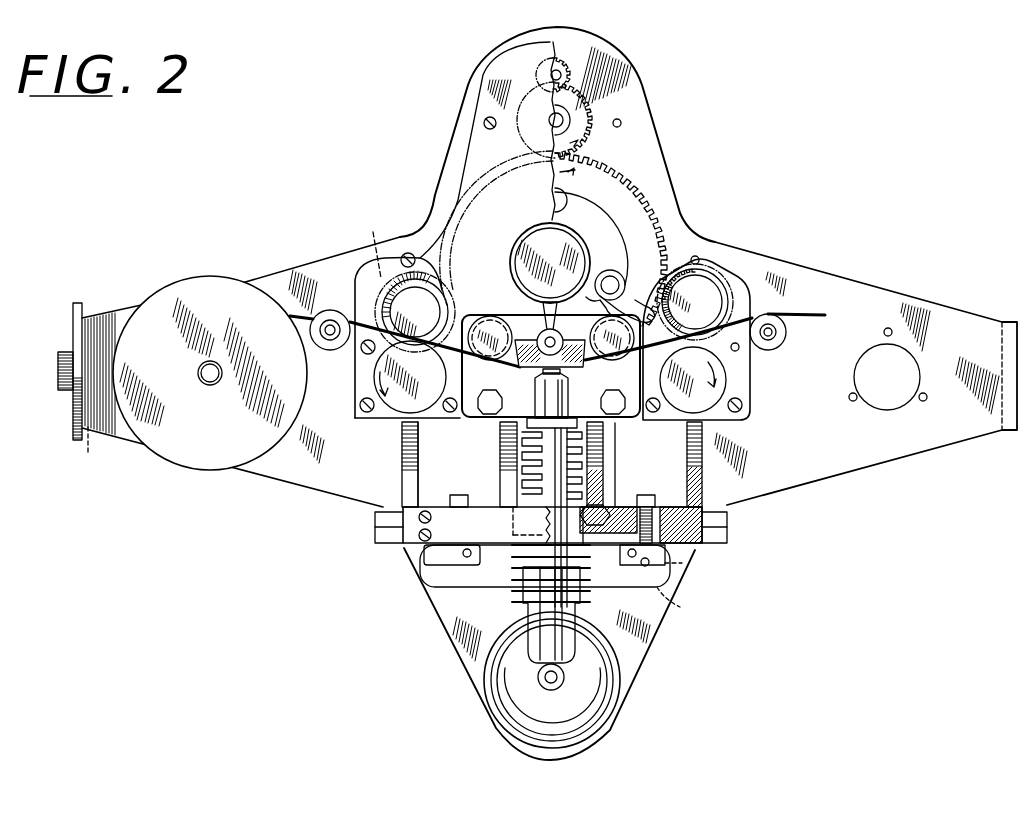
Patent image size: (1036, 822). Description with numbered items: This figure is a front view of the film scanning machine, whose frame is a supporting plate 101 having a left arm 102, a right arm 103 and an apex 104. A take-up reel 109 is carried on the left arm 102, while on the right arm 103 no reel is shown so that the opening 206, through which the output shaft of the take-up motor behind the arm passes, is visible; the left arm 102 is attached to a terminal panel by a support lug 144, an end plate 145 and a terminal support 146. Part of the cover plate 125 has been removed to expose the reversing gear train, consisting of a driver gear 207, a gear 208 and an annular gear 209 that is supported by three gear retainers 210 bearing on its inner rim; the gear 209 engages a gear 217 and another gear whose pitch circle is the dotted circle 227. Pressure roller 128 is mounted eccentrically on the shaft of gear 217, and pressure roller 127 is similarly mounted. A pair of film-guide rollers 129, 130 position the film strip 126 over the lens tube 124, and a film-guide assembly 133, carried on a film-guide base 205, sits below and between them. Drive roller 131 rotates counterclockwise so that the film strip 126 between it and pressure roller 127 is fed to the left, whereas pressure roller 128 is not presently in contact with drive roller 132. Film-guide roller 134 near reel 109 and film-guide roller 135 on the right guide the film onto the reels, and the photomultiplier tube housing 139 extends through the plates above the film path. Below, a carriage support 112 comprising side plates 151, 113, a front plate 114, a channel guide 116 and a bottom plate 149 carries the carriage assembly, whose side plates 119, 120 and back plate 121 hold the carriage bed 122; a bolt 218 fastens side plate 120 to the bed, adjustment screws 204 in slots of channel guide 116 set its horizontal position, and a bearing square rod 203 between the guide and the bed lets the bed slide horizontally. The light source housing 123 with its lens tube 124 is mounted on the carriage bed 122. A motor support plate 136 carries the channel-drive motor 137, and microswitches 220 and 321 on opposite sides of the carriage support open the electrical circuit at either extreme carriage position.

The supporting plate 101 is at (645, 92).
The arm 102 is at (118, 318).
The arm 103 is at (873, 455).
The apex 104 is at (538, 28).
The take-up reel 109 is at (173, 457).
The carriage support 112 is at (398, 552).
The side plate 113 is at (703, 442).
The front plate 114 is at (437, 507).
The channel guide 116 is at (660, 555).
The side plate 119 is at (507, 440).
The side plate 120 is at (597, 462).
The back plate 121 is at (603, 475).
The carriage bed 122 is at (606, 507).
The light source housing 123 is at (530, 593).
The lens tube 124 is at (540, 398).
The cover plate 125 is at (497, 78).
The film strip 126 is at (293, 315).
The pressure roller 127 is at (425, 312).
The pressure roller 128 is at (700, 297).
The film-guide roller 129 is at (487, 330).
The film-guide roller 130 is at (572, 358).
The drive roller 131 is at (402, 403).
The drive roller 132 is at (720, 385).
The film-guide assembly 133 is at (530, 360).
The film-guide roller 134 is at (323, 317).
The film-guide roller 135 is at (785, 338).
The motor support plate 136 is at (640, 677).
The channel-drive motor 137 is at (505, 680).
The photomultiplier tube housing 139 is at (527, 248).
The support lug 144 is at (70, 372).
The end plate 145 is at (78, 415).
The terminal support 146 is at (88, 440).
The bottom plate 149 is at (677, 545).
The side plate 151 is at (420, 458).
The bearing square rod 203 is at (645, 498).
The adjustment screws 204 is at (459, 504).
The film-guide base 205 is at (625, 413).
The opening 206 is at (900, 347).
The driver gear 207 is at (562, 72).
The gear 208 is at (575, 120).
The gear 209 is at (627, 210).
The gear retainers 210 is at (553, 196).
The gear 217 is at (672, 300).
The bolt 218 is at (588, 546).
The microswitch 220 is at (440, 560).
The dotted circle 227 is at (359, 246).
The microswitch 321 is at (688, 604).